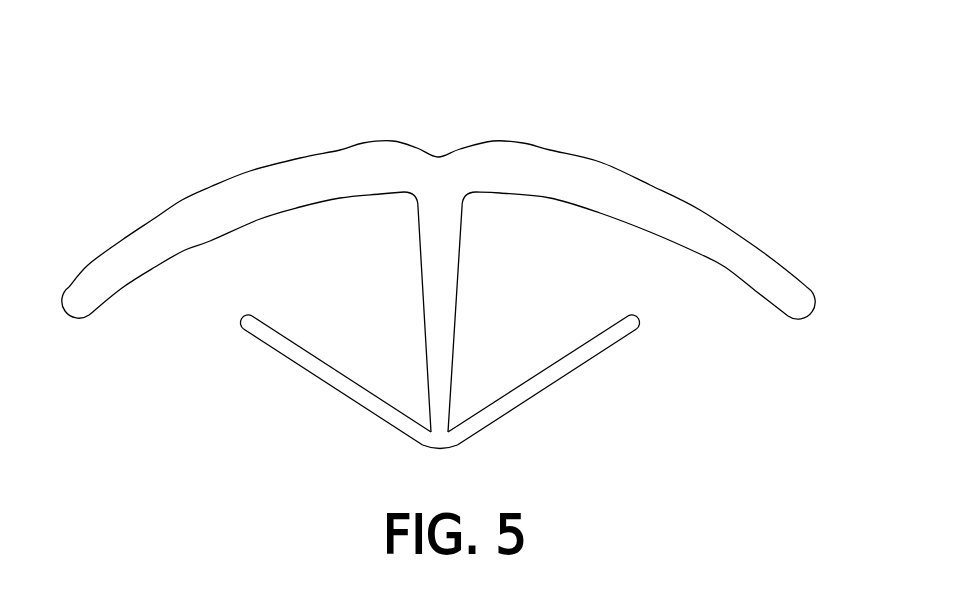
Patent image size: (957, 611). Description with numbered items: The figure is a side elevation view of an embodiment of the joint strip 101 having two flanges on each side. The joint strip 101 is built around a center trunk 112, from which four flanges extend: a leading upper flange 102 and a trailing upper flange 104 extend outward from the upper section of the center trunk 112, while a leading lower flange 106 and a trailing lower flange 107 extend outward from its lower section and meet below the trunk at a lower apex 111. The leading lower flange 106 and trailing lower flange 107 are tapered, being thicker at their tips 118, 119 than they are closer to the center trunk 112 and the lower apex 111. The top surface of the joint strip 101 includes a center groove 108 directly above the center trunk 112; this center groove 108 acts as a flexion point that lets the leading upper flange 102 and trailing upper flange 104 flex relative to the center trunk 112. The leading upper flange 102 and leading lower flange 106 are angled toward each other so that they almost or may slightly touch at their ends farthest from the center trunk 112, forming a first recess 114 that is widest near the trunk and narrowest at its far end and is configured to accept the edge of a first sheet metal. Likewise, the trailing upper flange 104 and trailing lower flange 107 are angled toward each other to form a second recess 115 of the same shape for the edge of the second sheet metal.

The joint strip 101 is at (438, 277).
The leading upper flange 102 is at (640, 178).
The trailing upper flange 104 is at (268, 170).
The leading lower flange 106 is at (538, 393).
The trailing lower flange 107 is at (327, 384).
The center groove 108 is at (435, 152).
The lower apex 111 is at (439, 448).
The center trunk 112 is at (422, 260).
The first recess 114 is at (522, 266).
The second recess 115 is at (348, 283).
The tip 118 is at (638, 329).
The tip 119 is at (240, 323).